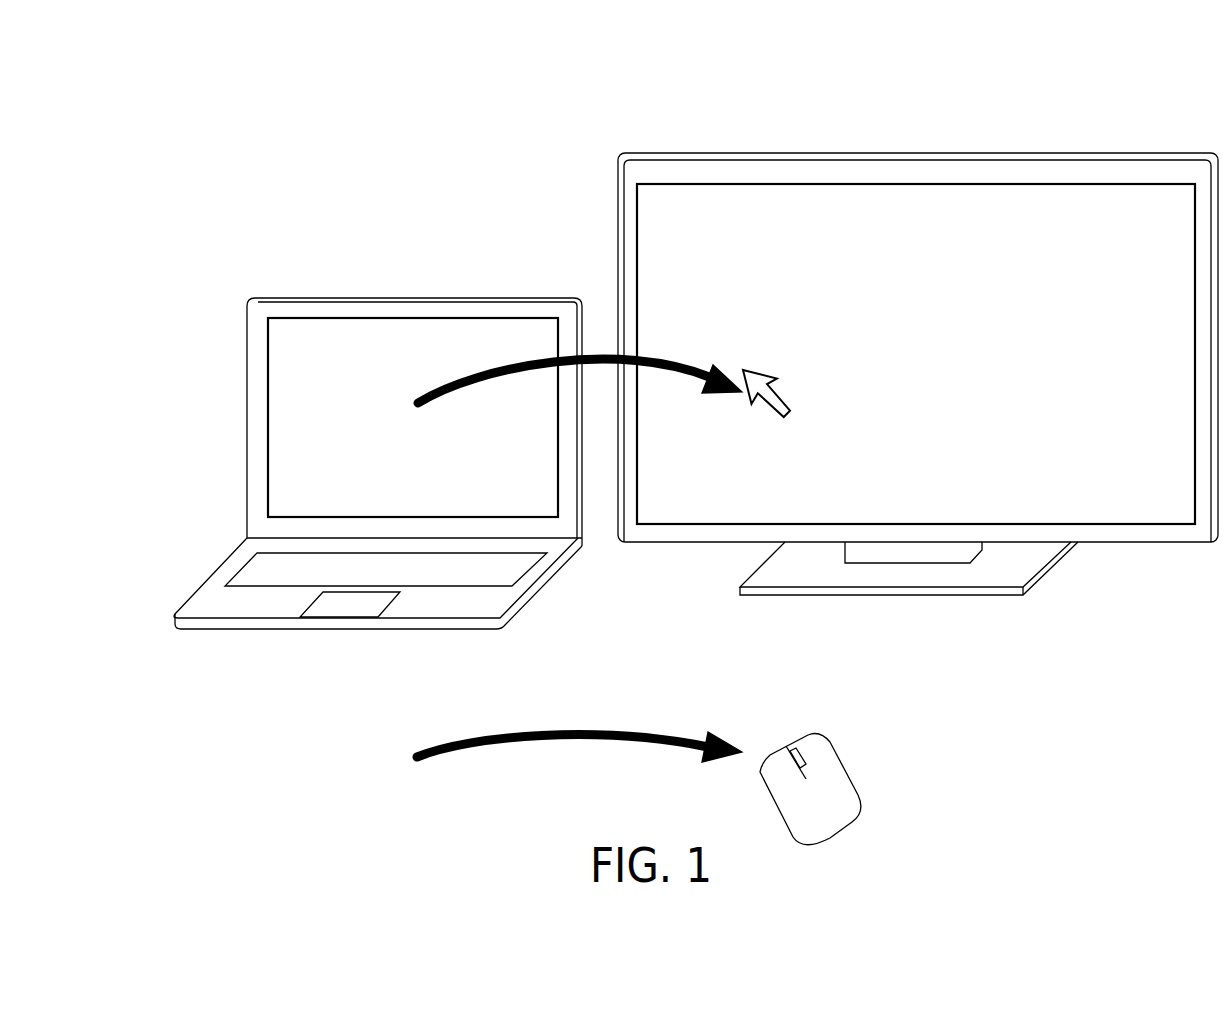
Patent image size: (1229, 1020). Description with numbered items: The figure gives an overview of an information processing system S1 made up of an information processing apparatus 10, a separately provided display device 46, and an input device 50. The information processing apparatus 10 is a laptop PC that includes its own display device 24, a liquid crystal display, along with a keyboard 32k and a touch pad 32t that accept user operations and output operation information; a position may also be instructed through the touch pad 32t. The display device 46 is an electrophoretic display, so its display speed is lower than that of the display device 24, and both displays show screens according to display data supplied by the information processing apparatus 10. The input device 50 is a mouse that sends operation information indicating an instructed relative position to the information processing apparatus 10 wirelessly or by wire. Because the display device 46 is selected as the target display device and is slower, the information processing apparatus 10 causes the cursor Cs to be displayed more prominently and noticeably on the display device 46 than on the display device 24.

The information processing system S1 is at (232, 103).
The information processing apparatus 10 is at (163, 295).
The display device 24 is at (448, 317).
The keyboard 32k is at (530, 573).
The touch pad 32t is at (340, 618).
The display device 46 is at (942, 183).
The input device 50 is at (838, 753).
The cursor Cs is at (786, 394).